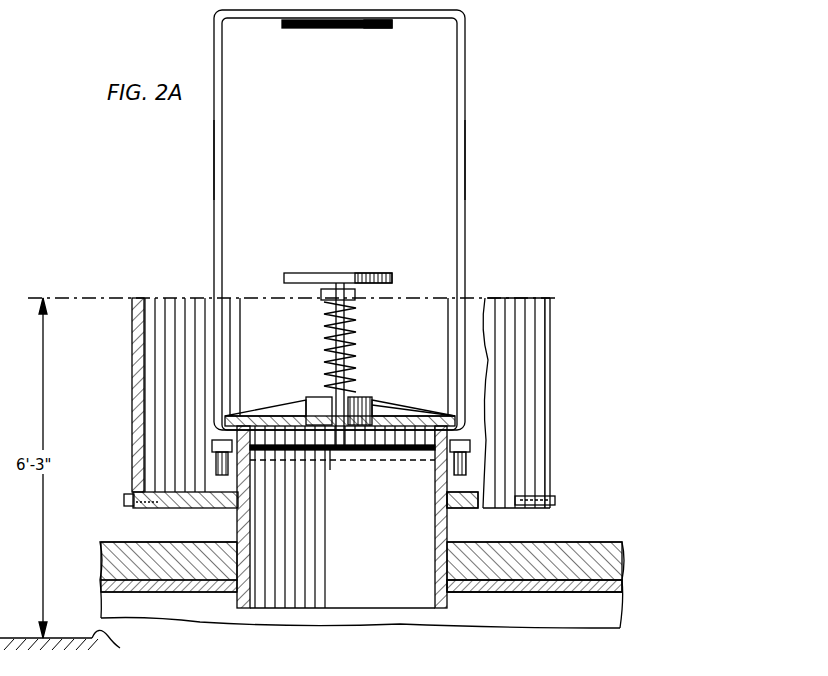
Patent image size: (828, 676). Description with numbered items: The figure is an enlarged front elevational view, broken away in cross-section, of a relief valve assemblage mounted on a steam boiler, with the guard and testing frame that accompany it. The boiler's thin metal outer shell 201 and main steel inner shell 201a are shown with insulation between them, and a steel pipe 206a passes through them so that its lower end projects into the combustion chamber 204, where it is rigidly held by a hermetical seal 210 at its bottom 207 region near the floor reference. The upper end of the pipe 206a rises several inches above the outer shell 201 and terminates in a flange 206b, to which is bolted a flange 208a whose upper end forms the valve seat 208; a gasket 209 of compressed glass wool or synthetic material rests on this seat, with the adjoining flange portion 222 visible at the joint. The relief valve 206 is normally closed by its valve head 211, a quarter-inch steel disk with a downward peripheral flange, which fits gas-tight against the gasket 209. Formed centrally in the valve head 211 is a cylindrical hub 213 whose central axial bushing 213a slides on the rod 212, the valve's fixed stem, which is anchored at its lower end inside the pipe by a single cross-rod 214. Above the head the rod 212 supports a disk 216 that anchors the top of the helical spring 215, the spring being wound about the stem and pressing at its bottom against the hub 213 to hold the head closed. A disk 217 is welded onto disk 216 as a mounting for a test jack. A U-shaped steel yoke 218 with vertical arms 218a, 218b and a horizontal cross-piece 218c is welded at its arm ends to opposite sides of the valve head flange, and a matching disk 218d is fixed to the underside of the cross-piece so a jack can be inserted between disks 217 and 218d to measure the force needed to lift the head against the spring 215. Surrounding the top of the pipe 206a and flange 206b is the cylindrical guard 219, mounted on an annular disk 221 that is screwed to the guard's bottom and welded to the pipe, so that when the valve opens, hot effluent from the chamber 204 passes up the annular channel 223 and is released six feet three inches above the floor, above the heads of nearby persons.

The outer shell 201 is at (585, 542).
The main steel inner shell 201a is at (538, 586).
The combustion chamber 204 is at (462, 620).
The relief valve 206 is at (322, 372).
The steel pipe 206a is at (238, 518).
The flange 206b is at (128, 496).
The ground level 207 is at (75, 649).
The valve seat 208 is at (470, 456).
The flange 208a is at (214, 456).
The gasket 209 is at (400, 452).
The hermetical seal 210 is at (237, 592).
The valve head 211 is at (280, 415).
The rod 212 is at (346, 358).
The cylindrical hub 213 is at (362, 398).
The central axial bushing 213a is at (378, 412).
The cross-rod 214 is at (340, 452).
The helical spring 215 is at (352, 340).
The disk 216 is at (356, 292).
The disk 217 is at (380, 275).
The rectangular framework or yoke 218 is at (474, 86).
The vertical arm 218a is at (222, 156).
The vertical arm 218b is at (458, 162).
The horizontal cross-piece 218c is at (245, 20).
The matching disk 218d is at (380, 28).
The cylindrical guard or shield 219 is at (515, 300).
The annular disk 221 is at (522, 506).
The flange 222 is at (450, 512).
The annular channel 223 is at (148, 320).